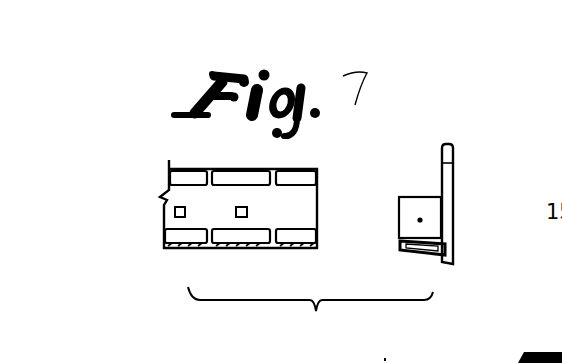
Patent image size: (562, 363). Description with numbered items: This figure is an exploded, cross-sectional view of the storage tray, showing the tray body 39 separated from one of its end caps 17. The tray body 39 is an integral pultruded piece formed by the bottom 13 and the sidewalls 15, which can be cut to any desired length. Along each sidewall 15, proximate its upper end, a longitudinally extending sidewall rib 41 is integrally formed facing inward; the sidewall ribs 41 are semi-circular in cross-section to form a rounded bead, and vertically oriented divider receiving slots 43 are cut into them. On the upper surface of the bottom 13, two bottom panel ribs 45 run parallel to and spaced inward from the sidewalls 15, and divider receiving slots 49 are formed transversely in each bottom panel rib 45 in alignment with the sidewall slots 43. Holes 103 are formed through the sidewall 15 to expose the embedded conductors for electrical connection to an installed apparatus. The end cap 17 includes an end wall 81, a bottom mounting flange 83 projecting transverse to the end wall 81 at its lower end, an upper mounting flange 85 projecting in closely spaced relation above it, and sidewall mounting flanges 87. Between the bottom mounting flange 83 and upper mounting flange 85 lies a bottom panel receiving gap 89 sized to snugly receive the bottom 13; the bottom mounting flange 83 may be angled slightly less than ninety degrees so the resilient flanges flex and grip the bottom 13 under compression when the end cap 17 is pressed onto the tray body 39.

The bottom 13 is at (178, 250).
The sidewall 15 is at (177, 212).
The end cap 17 is at (456, 143).
The tray body 39 is at (319, 166).
The sidewall rib 41 is at (250, 175).
The divider receiving slot 43 is at (275, 186).
The bottom panel rib 45 is at (241, 246).
The divider receiving slot 49 is at (270, 247).
The end wall 81 is at (455, 187).
The bottom mounting flange 83 is at (437, 256).
The upper mounting flange 85 is at (400, 242).
The sidewall mounting flange 87 is at (415, 205).
The bottom panel receiving gap 89 is at (422, 254).
The hole 103 is at (213, 248).